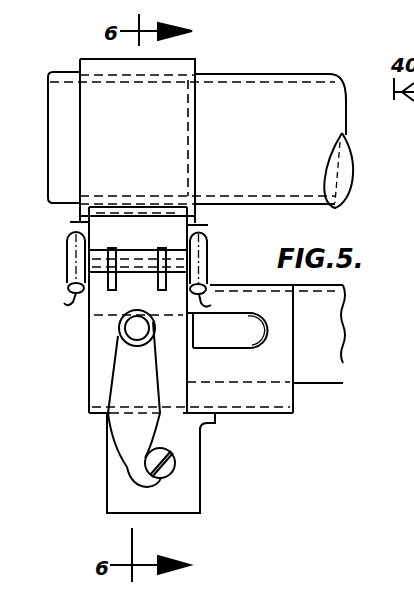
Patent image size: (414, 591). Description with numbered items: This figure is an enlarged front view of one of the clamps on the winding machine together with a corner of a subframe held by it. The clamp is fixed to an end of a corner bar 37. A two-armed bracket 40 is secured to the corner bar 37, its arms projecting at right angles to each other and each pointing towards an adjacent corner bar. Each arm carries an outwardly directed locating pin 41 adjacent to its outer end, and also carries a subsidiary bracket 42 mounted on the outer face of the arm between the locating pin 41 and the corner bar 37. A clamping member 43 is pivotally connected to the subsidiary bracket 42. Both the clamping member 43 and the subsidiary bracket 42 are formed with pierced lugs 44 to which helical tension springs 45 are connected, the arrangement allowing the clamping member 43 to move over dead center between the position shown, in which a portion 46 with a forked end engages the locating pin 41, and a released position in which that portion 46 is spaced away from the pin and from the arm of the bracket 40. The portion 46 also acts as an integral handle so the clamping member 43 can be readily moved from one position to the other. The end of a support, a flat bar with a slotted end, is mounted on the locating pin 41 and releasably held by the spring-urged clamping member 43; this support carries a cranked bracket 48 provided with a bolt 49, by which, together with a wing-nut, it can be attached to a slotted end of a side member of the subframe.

The corner bar 37 is at (310, 150).
The two-armed bracket 40 is at (197, 114).
The subsidiary bracket 42 is at (141, 244).
The pierced lugs 44 is at (200, 228).
The helical tension springs 45 is at (70, 258).
The locating pin 41 is at (128, 331).
The clamping member 43 is at (123, 390).
The portion with a forked end 46 is at (127, 466).
The bolt 49 is at (173, 466).
The cranked bracket 48 is at (182, 498).